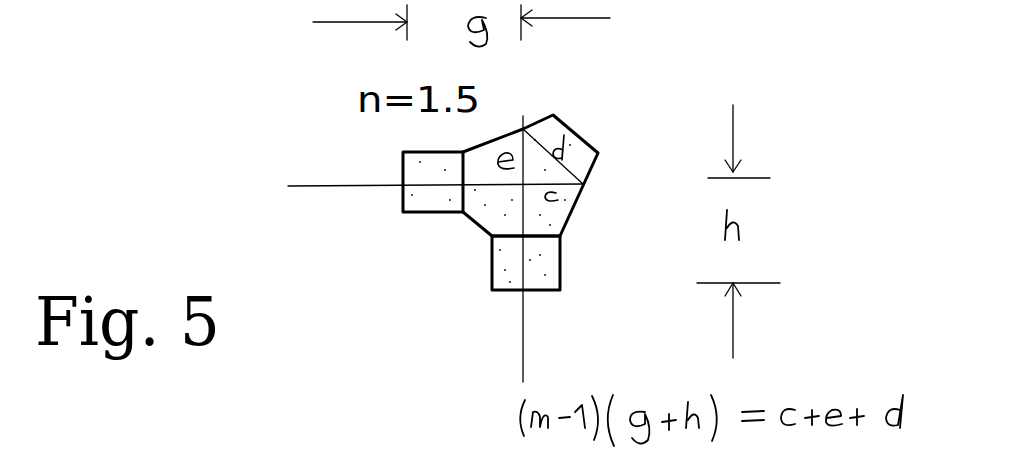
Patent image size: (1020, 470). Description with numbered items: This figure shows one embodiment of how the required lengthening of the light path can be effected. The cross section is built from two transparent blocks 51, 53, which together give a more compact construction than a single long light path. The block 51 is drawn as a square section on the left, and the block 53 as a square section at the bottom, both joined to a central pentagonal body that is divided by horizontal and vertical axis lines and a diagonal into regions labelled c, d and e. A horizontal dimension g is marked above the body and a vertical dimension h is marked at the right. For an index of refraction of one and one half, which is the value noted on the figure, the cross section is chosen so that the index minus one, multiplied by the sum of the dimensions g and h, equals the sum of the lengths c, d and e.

The transparent block 51 is at (420, 218).
The transparent block 53 is at (566, 266).
The dimension g is at (461, 26).
The dimension h is at (738, 231).
The dimension c is at (551, 196).
The dimension d is at (558, 147).
The dimension e is at (506, 161).